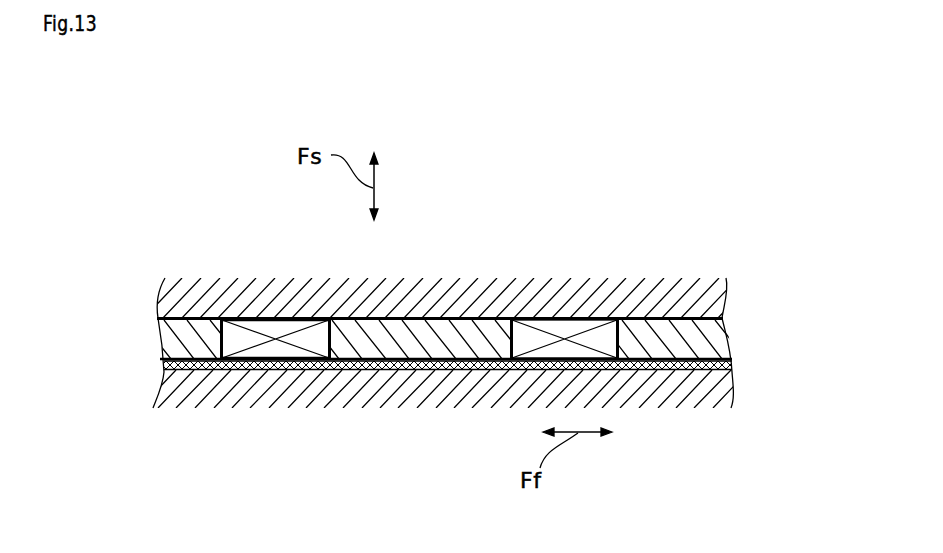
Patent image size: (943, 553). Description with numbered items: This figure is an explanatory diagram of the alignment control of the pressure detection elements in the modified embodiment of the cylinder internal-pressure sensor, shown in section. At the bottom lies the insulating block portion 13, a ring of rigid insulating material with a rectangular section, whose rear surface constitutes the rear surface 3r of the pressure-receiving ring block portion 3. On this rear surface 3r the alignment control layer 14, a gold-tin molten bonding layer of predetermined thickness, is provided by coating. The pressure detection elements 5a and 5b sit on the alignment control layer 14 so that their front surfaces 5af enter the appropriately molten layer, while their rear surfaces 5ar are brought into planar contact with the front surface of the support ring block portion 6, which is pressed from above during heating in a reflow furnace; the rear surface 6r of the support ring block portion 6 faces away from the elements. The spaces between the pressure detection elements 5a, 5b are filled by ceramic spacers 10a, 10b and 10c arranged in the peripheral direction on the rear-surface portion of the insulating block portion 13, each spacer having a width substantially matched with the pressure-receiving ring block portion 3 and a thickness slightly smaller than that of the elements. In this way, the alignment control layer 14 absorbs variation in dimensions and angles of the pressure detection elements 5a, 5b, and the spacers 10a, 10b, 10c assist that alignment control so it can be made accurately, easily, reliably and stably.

The support ring block portion 6 is at (727, 291).
The rear surface of plate 6 6r is at (484, 319).
The spacer 10c is at (190, 318).
The spacer 10a is at (433, 318).
The spacer 10b is at (658, 318).
The pressure detection element 5a is at (272, 340).
The rear surface of pressure detection element 5ar is at (266, 318).
The front surface of pressure detection element 5af is at (245, 371).
The pressure detection element 5b is at (578, 318).
The rear surface of pressure-receiving ring block portion 3r is at (718, 352).
The alignment control layer 14 is at (408, 371).
The insulating block portion 13 is at (733, 394).
The pressure-receiving ring block portion 3 is at (458, 403).